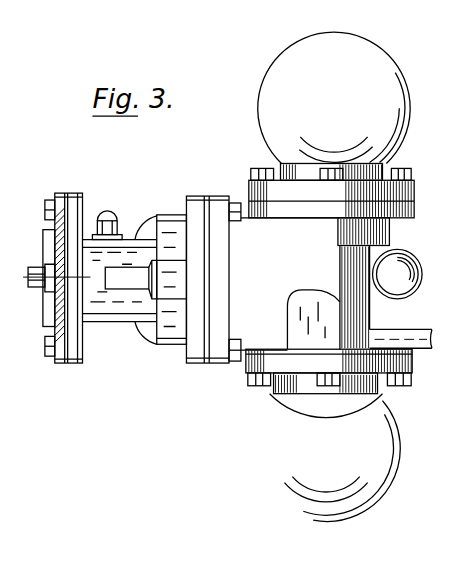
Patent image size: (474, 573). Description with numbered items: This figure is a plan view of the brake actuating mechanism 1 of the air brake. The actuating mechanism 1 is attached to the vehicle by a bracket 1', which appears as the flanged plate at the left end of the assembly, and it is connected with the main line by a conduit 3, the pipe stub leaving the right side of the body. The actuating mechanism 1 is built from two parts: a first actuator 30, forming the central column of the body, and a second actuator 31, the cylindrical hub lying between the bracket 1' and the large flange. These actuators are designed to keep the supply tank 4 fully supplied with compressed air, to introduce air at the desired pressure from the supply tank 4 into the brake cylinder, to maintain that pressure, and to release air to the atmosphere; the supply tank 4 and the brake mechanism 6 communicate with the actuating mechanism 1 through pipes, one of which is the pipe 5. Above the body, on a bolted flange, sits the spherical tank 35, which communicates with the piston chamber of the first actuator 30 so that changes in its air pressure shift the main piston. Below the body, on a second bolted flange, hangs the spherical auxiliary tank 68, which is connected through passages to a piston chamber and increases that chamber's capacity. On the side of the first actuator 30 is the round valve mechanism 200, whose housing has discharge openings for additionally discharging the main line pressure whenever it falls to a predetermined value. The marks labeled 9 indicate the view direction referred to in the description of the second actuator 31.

The actuating mechanism 1 is at (181, 256).
The bracket 1' is at (63, 263).
The conduit 3 is at (425, 346).
The supply tank 4 is at (430, 225).
The pipe 5 is at (33, 250).
The brake mechanism 6 is at (343, 17).
The view direction 9 is at (33, 287).
The first actuator 30 is at (372, 310).
The second actuator 31 is at (147, 332).
The tank 35 is at (385, 62).
The auxiliary tank 68 is at (388, 497).
The valve mechanism 200 is at (418, 260).